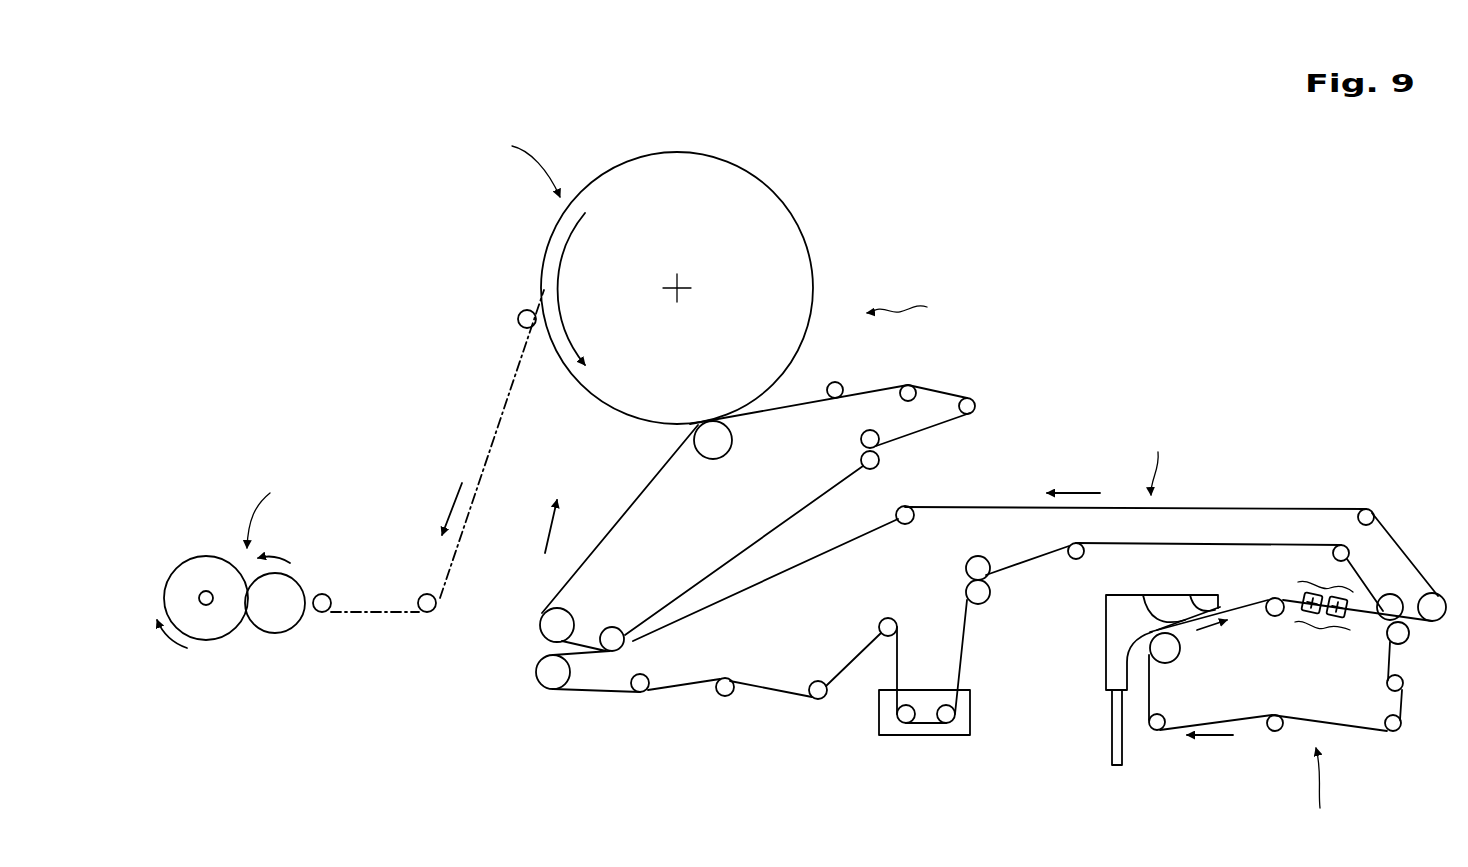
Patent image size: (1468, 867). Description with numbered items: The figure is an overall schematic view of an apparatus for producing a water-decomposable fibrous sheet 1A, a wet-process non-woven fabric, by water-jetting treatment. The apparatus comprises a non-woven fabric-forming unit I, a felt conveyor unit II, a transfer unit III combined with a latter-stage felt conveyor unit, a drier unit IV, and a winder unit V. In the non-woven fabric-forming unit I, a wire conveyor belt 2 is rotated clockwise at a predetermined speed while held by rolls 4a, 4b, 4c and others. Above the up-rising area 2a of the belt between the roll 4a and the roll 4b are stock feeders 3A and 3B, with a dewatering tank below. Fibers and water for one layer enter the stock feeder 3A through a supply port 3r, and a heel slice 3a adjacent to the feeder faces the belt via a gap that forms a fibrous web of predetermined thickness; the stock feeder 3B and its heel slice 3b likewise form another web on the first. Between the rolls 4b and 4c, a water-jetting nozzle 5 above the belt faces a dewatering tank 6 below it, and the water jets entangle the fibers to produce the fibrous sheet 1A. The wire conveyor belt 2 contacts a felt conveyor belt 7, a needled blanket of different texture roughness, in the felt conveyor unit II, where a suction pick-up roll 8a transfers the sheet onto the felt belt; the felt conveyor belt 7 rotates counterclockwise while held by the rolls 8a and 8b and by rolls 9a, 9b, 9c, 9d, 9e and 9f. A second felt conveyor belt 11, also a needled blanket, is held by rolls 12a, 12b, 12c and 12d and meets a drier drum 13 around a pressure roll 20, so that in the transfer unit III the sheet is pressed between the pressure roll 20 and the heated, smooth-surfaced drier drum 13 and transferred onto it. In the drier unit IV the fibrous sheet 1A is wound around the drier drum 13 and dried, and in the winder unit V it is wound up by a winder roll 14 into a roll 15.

The drier drum 13 is at (788, 243).
The pressure roll 20 is at (712, 445).
The second felt conveyor belt 11 is at (945, 386).
The roll 12a is at (567, 618).
The roll 12b is at (617, 627).
The roll 12c is at (869, 468).
The roll 12d is at (841, 383).
The felt conveyor belt 7 is at (1302, 507).
The roll 9a is at (1368, 510).
The roll 9b is at (905, 506).
The roll 9c is at (553, 679).
The roll 9d is at (888, 619).
The roll 9e is at (989, 593).
The roll 9f is at (1341, 545).
The roll 8a is at (1390, 603).
The roll 8b is at (1432, 605).
The water-jetting nozzle 5 is at (1330, 580).
The dewatering tank 6 is at (1320, 630).
The roll 4a is at (1167, 648).
The roll 4b is at (1275, 616).
The roll 4c is at (1400, 636).
The stock feeder 3A is at (1112, 640).
The stock feeder 3B is at (1175, 603).
The heel slice 3a is at (1140, 598).
The heel slice 3b is at (1193, 605).
The supply port 3r is at (1112, 745).
The wire conveyor belt 2 is at (1355, 733).
The up-rising area 2a is at (1177, 627).
The fibrous sheet 1A is at (487, 449).
The winder roll 14 is at (288, 617).
The roll 15 is at (217, 625).
The non-woven fabric-forming unit I is at (1320, 792).
The felt conveyor unit II is at (1105, 459).
The transfer unit III is at (908, 307).
The drier unit IV is at (527, 161).
The winder unit V is at (265, 508).